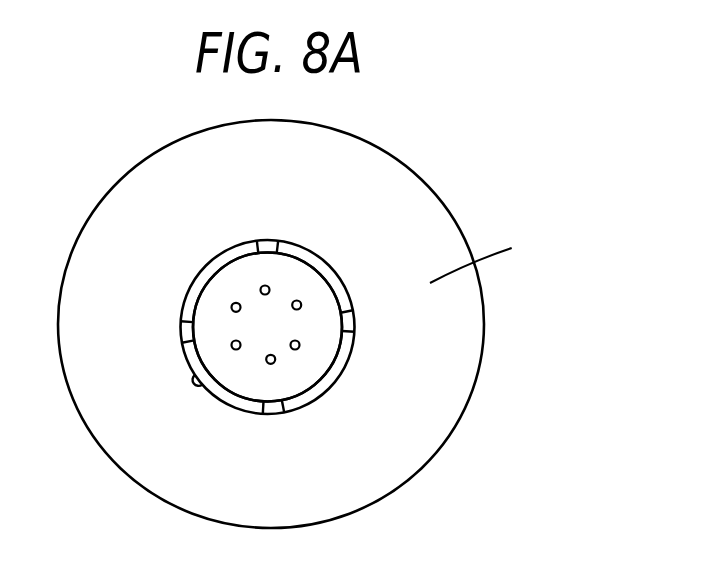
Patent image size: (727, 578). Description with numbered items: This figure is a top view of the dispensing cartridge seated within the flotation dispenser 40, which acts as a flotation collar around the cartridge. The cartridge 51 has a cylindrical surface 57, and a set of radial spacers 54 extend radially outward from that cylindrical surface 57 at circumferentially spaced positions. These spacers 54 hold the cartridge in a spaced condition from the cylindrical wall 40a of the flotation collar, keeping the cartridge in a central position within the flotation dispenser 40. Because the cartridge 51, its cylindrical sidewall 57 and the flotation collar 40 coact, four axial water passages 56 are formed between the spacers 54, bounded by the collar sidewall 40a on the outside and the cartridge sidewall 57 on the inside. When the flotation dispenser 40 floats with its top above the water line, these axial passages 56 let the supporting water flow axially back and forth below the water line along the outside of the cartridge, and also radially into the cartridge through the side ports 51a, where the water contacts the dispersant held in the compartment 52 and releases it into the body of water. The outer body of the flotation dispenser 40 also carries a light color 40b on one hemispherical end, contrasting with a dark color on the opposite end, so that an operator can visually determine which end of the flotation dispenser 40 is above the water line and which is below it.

The flotation dispenser 40 is at (460, 222).
The cylindrical wall 40a is at (197, 377).
The light color 40b is at (484, 250).
The cartridge 51 is at (285, 272).
The side ports 51a is at (232, 303).
The compartment 52 is at (357, 320).
The radial spacers 54 is at (267, 240).
The axial water passages 56 is at (315, 257).
The cylindrical surface 57 is at (333, 362).